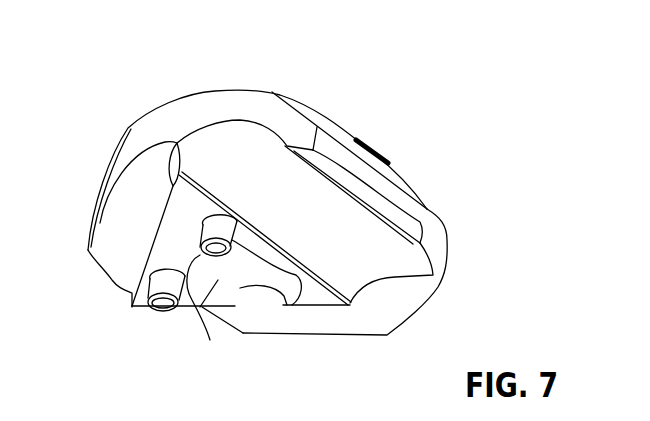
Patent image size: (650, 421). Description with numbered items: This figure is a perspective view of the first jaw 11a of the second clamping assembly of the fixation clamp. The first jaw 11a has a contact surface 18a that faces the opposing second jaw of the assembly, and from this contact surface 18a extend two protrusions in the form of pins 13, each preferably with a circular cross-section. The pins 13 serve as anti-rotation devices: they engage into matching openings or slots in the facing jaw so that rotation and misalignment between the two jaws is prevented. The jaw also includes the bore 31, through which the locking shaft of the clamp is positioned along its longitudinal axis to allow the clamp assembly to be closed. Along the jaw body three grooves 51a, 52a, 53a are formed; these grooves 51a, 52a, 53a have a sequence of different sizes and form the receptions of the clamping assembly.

The first jaw 11a is at (265, 112).
The pin 13 is at (163, 305).
The contact surface 18a is at (188, 217).
The bore 31 is at (240, 290).
The groove 51a is at (365, 313).
The groove 52a is at (373, 260).
The groove 53a is at (123, 230).